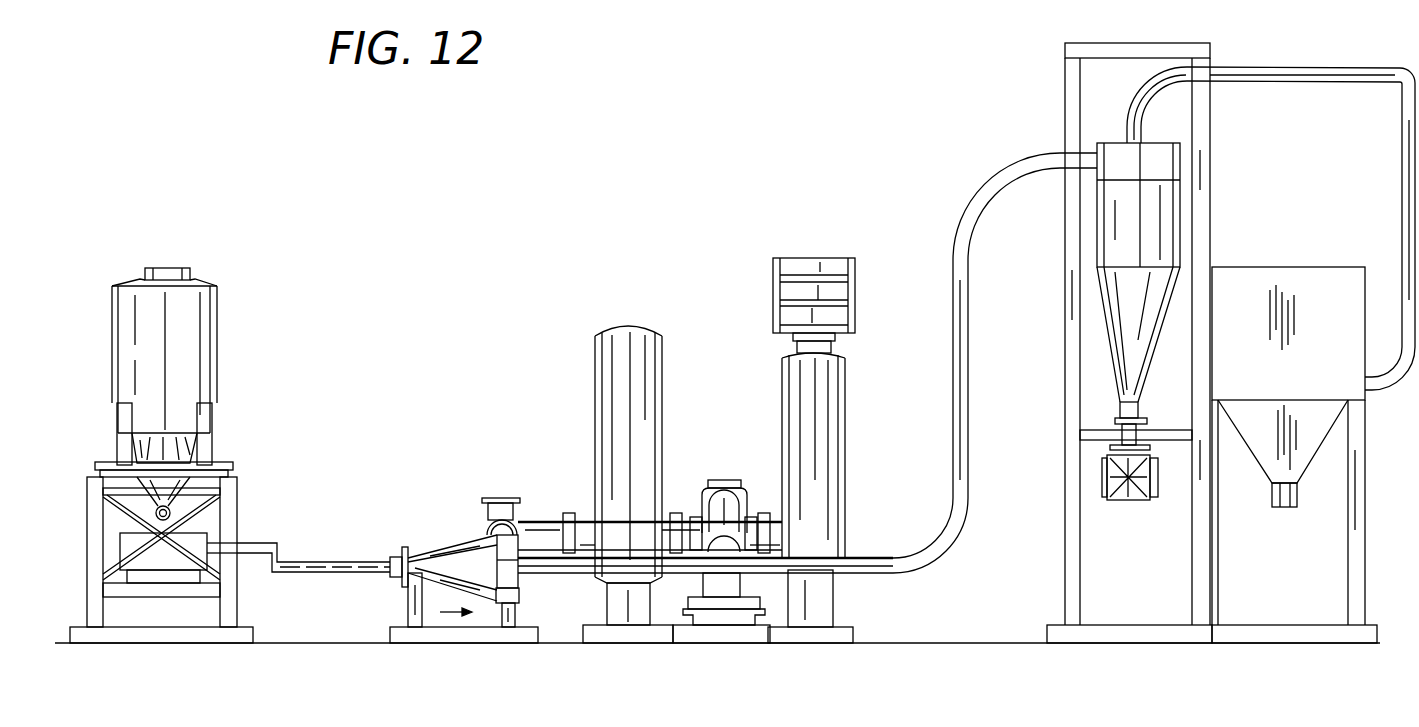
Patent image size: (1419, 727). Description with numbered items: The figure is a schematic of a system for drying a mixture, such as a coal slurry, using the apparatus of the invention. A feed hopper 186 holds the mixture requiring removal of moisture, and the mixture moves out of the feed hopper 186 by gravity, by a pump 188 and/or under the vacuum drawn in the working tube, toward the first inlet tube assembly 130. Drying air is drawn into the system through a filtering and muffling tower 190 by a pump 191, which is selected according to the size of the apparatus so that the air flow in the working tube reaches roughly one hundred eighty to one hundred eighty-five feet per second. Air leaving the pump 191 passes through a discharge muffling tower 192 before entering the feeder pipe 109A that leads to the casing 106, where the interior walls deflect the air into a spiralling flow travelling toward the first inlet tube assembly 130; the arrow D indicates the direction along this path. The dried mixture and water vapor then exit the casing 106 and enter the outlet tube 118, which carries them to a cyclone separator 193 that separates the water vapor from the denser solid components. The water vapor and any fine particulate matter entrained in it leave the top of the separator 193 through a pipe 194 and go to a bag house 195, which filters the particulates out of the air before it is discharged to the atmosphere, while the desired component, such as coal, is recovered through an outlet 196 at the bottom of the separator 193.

The feed hopper 186 is at (217, 331).
The pump 188 is at (193, 537).
The first inlet tube assembly 130 is at (341, 556).
The casing 106 is at (458, 536).
The feeder pipe 109A is at (541, 520).
The outlet tube 118 is at (572, 566).
The discharge muffling tower 192 is at (595, 383).
The pump 191 is at (722, 482).
The filtering and muffling tower 190 is at (845, 404).
The cyclone separator 193 is at (1113, 213).
The pipe 194 is at (1302, 68).
The bag house 195 is at (1303, 277).
The outlet 196 is at (1113, 499).
The direction of flow D is at (447, 612).